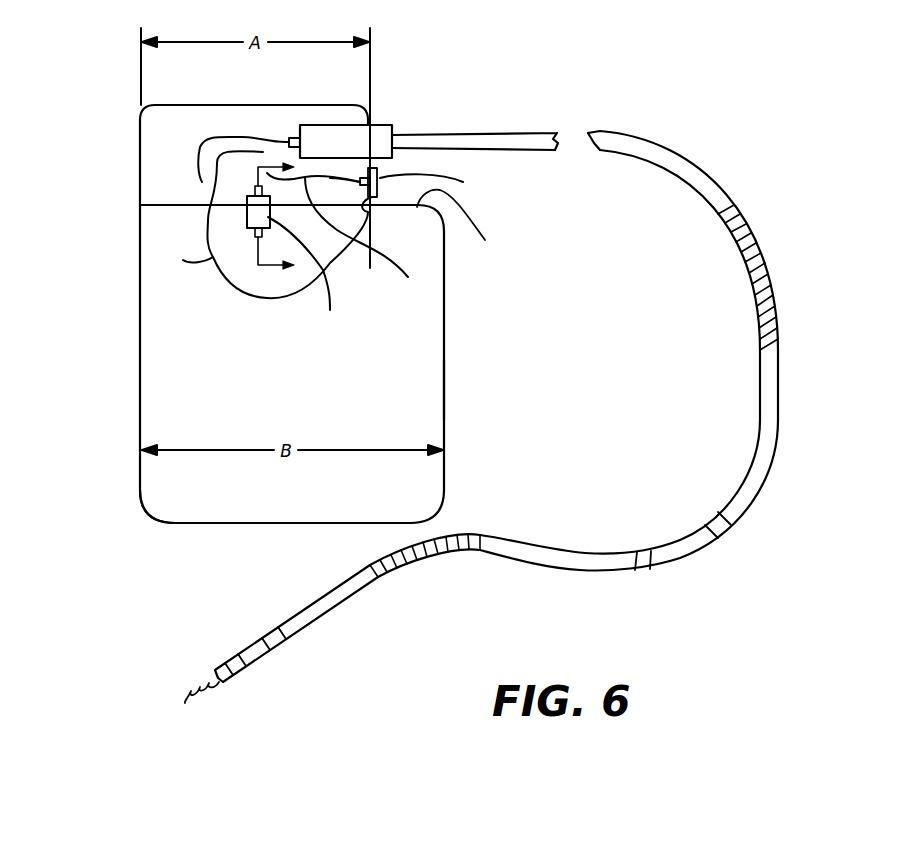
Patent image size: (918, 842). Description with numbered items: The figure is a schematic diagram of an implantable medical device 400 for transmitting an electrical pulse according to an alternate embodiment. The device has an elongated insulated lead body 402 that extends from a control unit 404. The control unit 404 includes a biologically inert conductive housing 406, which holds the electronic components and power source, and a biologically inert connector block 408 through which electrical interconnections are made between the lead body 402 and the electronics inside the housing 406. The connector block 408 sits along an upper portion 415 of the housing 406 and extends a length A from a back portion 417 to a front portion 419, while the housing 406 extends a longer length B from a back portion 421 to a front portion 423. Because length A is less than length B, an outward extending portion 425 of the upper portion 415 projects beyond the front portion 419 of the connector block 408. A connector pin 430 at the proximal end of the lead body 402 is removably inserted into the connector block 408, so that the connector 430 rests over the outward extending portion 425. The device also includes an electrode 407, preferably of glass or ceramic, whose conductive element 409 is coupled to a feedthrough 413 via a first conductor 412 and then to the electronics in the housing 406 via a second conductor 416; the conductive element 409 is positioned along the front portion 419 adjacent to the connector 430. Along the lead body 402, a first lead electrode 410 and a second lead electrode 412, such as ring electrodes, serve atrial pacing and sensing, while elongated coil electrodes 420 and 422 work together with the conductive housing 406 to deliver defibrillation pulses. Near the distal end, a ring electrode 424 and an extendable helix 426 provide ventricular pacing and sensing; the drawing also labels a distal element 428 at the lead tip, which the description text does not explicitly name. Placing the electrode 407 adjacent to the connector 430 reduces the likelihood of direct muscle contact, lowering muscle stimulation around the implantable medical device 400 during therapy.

The implantable medical device 400 is at (528, 92).
The elongated insulated lead body 402 is at (628, 143).
The control unit 404 is at (110, 203).
The conductive housing 406 is at (150, 380).
The electrode 407 is at (386, 183).
The connector block 408 is at (153, 162).
The conductive element 409 is at (369, 244).
The first lead electrode 410 is at (717, 513).
The first conductor / second lead electrode 412 is at (655, 548).
The feedthrough 413 is at (308, 275).
The upper portion 415 is at (168, 207).
The second conductor 416 is at (223, 270).
The back portion 417 is at (138, 125).
The front portion 419 is at (372, 115).
The elongated coil electrode 420 is at (413, 560).
The back portion 421 is at (140, 420).
The elongated coil electrode 422 is at (770, 265).
The front portion 423 is at (446, 393).
The ring electrode 424 is at (272, 647).
The outward extending portion 425 is at (460, 228).
The extendable helix 426 is at (203, 700).
The tip electrode 428 is at (220, 673).
The connector pin 430 is at (324, 133).